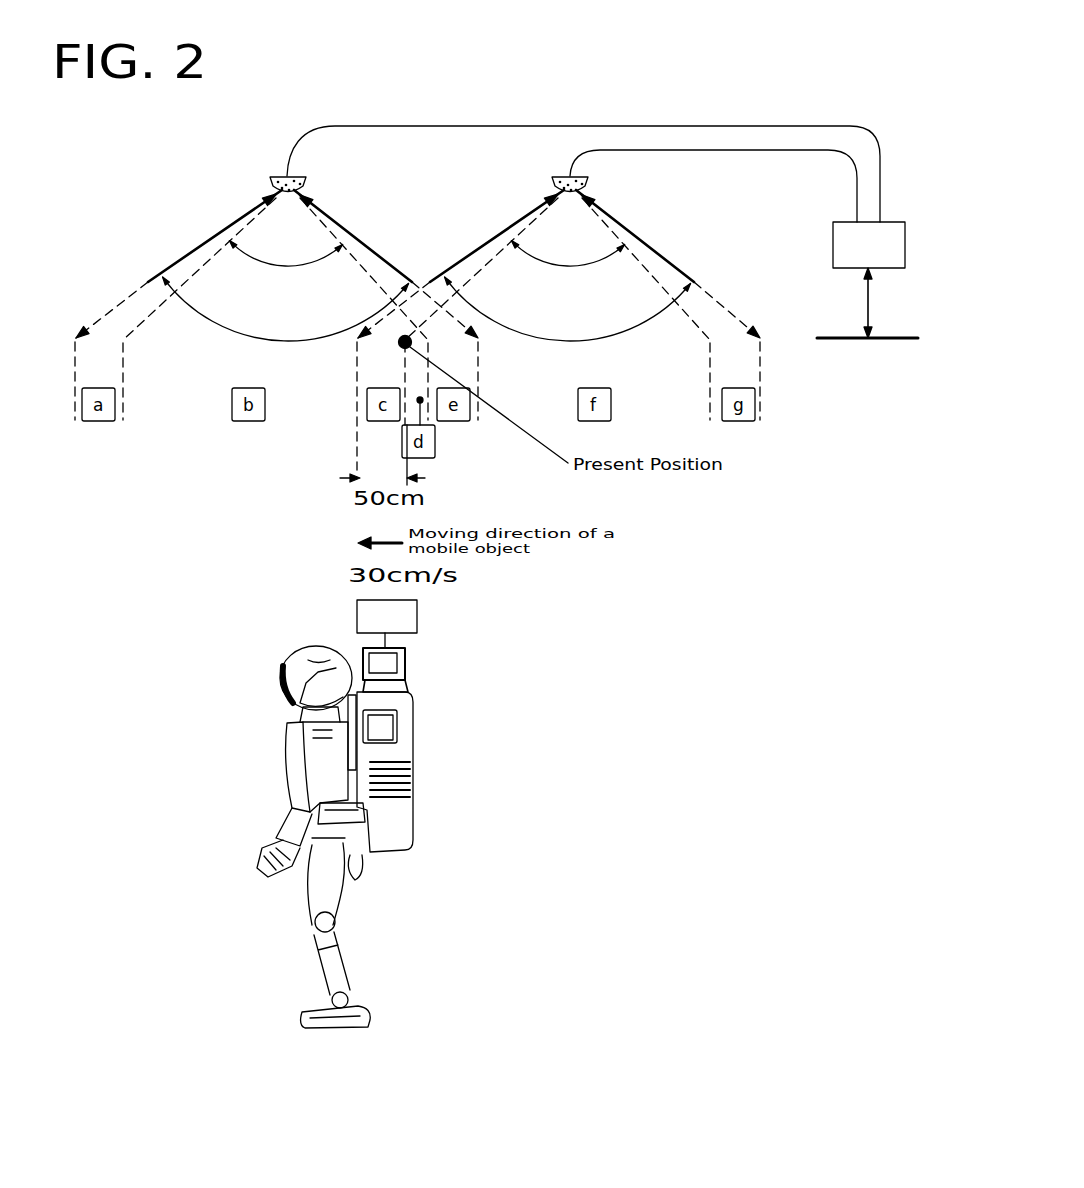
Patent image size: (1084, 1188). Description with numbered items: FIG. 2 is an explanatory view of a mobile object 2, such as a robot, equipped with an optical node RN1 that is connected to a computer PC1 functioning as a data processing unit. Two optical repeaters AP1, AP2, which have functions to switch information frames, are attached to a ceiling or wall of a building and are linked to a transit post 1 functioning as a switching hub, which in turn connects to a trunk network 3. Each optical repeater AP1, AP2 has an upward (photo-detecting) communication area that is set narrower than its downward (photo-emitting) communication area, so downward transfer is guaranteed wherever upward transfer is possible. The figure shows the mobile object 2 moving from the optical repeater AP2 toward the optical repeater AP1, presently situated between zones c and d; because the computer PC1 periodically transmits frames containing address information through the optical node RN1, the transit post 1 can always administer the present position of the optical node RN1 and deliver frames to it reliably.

The transit post 1 is at (905, 233).
The mobile object 2 is at (287, 735).
The trunk network 3 is at (908, 340).
The optical repeater AP1 is at (306, 184).
The optical repeater AP2 is at (588, 184).
The optical node RN1 is at (417, 610).
The computer PC1 is at (405, 663).